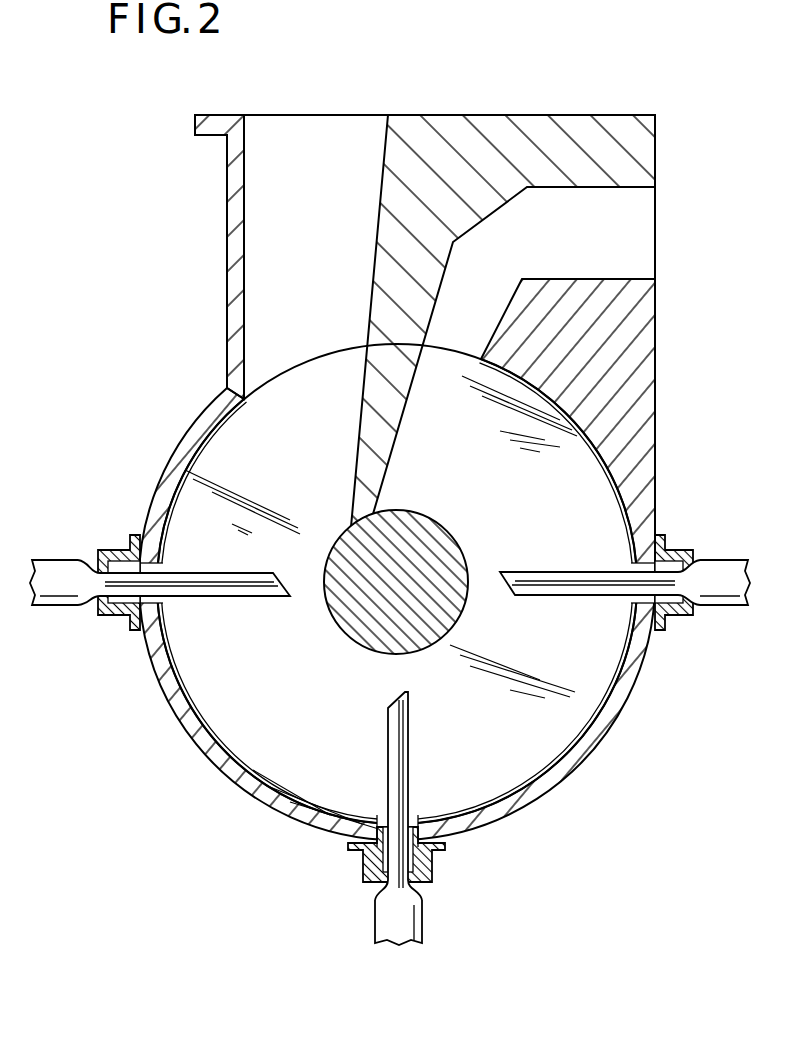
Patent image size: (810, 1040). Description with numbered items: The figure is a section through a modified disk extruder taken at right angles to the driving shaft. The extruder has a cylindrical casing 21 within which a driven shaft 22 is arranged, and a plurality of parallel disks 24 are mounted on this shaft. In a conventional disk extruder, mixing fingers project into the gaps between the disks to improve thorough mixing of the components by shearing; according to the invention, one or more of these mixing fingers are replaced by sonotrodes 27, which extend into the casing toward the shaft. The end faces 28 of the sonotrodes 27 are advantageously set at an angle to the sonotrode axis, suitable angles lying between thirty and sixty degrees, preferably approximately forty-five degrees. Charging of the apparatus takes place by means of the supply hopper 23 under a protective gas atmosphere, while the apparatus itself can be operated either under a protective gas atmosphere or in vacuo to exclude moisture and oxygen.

The cylindrical casing 21 is at (557, 773).
The driven shaft 22 is at (422, 548).
The supply hopper 23 is at (258, 205).
The parallel disks 24 is at (258, 730).
The sonotrode 27 is at (120, 608).
The end face 28 is at (283, 579).